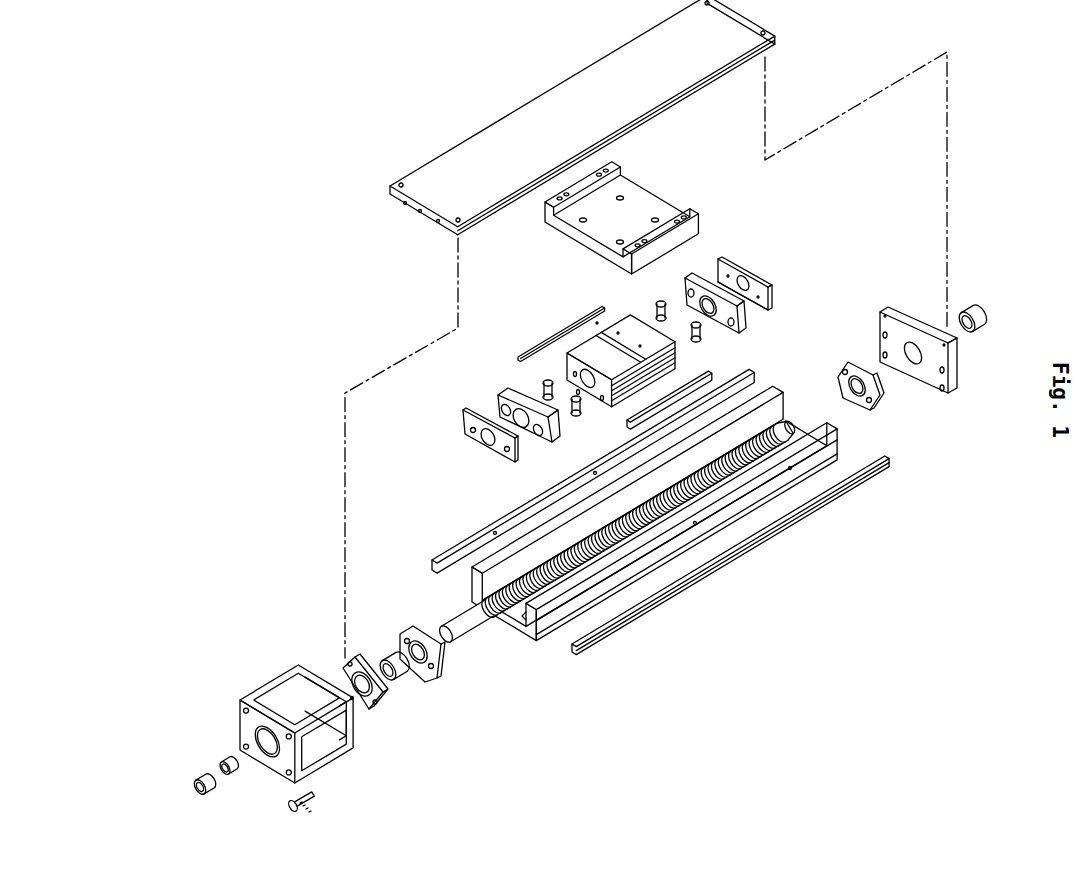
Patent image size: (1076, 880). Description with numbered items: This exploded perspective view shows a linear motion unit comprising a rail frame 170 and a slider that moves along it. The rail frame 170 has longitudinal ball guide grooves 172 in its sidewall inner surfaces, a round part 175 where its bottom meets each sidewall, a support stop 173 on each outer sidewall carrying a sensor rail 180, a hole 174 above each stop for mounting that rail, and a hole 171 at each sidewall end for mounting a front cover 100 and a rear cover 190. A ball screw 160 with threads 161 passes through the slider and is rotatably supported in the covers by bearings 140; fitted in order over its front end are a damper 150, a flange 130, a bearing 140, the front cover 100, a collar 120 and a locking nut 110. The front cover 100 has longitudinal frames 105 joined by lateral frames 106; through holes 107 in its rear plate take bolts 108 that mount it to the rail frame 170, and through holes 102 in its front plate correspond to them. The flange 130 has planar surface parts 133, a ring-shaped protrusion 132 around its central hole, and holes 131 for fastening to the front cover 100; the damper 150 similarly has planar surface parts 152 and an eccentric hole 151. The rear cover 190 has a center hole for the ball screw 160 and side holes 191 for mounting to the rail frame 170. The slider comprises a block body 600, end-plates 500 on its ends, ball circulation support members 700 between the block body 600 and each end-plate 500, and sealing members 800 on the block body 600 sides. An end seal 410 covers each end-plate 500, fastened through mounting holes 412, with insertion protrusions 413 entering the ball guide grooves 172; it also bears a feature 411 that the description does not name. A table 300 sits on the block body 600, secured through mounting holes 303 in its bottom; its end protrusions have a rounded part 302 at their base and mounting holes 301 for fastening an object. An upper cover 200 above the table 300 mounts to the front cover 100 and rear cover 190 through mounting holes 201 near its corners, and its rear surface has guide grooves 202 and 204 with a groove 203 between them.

The front cover 100 is at (260, 707).
The through holes 102 is at (239, 731).
The longitudinal frames 105 is at (268, 697).
The lateral frames 106 is at (312, 684).
The through holes 107 is at (343, 757).
The bolts 108 is at (289, 806).
The locking nut 110 is at (197, 783).
The collar 120 is at (220, 768).
The flange 130 is at (377, 669).
The holes 131 is at (380, 698).
The ring-shaped protrusion 132 is at (356, 702).
The planar surface parts 133 is at (345, 671).
The bearing 140 is at (384, 656).
The damper 150 is at (635, 517).
The hole 151 is at (406, 637).
The planar surface parts 152 is at (418, 640).
The ball screw 160 is at (617, 555).
The threads 161 is at (517, 613).
The rail frame 170 is at (654, 524).
The hole 171 is at (532, 627).
The ball guide grooves 172 is at (778, 392).
The support stop 173 is at (648, 571).
The hole 174 is at (597, 584).
The round part 175 is at (790, 414).
The sensor rail 180 is at (748, 546).
The rear cover 190 is at (928, 343).
The holes 191 is at (938, 396).
The upper cover 200 is at (391, 198).
The mounting holes 201 is at (401, 183).
The guide groove 202 is at (405, 204).
The groove 203 is at (420, 212).
The guide groove 204 is at (438, 222).
The table 300 is at (604, 205).
The mounting holes 301 is at (600, 168).
The rounded part 302 is at (556, 216).
The mounting holes 303 is at (658, 218).
The end seal 410 is at (770, 260).
The shaft hole 411 is at (729, 257).
The mounting holes 412 is at (769, 290).
The insertion protrusions 413 is at (770, 308).
The end-plates 500 is at (687, 280).
The block body 600 is at (610, 409).
The ball circulation support members 700 is at (543, 381).
The sealing members 800 is at (557, 331).